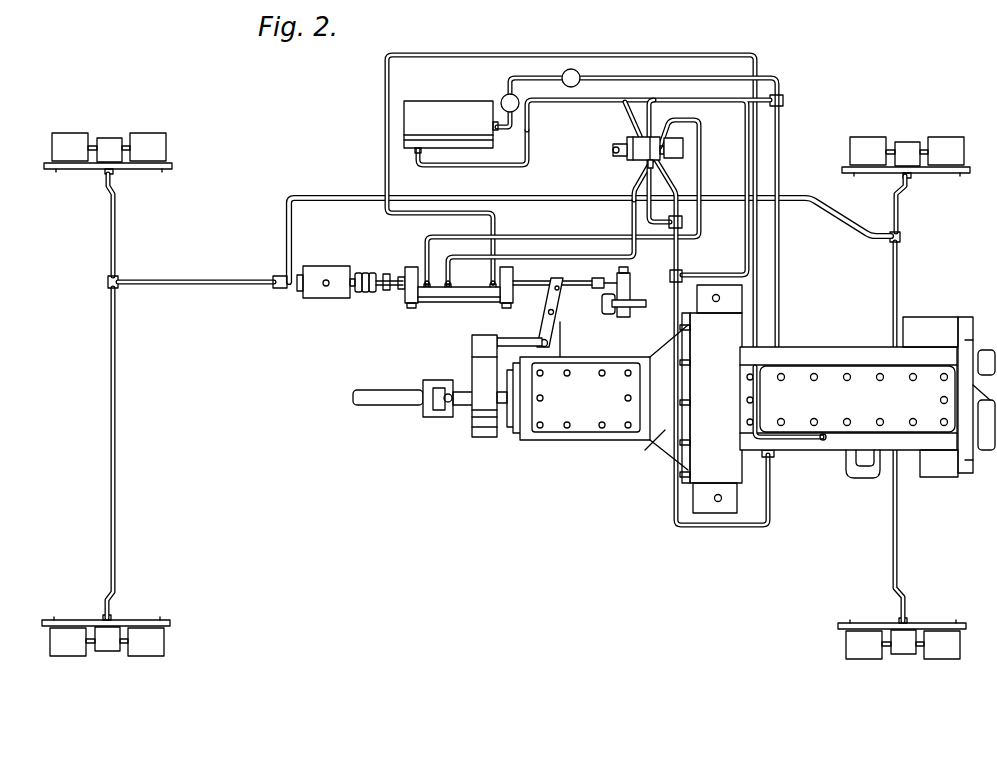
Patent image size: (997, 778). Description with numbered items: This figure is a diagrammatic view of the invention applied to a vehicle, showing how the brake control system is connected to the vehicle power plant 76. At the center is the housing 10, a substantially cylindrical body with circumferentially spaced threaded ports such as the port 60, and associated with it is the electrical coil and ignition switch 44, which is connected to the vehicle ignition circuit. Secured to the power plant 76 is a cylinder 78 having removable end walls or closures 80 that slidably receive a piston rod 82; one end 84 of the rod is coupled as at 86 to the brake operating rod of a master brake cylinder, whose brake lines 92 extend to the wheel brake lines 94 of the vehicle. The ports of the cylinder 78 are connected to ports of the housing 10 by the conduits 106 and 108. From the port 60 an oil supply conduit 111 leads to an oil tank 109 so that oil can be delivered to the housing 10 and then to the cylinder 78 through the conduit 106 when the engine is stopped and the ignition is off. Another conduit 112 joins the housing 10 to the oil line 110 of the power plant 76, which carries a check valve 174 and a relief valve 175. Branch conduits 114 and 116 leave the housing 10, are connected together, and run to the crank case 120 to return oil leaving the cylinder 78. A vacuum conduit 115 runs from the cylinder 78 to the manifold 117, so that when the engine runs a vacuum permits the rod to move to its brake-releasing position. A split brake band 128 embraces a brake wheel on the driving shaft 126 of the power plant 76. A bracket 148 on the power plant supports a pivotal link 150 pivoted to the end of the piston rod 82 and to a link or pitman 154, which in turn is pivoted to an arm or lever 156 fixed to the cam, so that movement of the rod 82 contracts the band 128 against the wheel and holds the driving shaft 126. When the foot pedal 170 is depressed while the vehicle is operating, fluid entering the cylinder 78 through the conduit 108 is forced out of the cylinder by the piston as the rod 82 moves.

The housing 10 is at (632, 140).
The electrical coil and ignition switch 44 is at (678, 157).
The port 60 is at (646, 166).
The vehicle power plant 76 is at (867, 397).
The cylinder 78 is at (432, 302).
The end walls or closures 80 is at (413, 268).
The piston rod 82 is at (532, 288).
The end of piston rod 84 is at (392, 293).
The coupling 86 is at (390, 273).
The brake lines 92 is at (330, 196).
The wheel brake lines 94 is at (116, 412).
The conduit 106 is at (574, 256).
The conduit 108 is at (516, 237).
The oil tank 109 is at (438, 112).
The oil line 110 is at (779, 166).
The oil supply conduit 111 is at (529, 148).
The conduit 112 is at (708, 103).
The branch conduit 114 is at (636, 186).
The conduit 115 is at (385, 124).
The branch conduit 116 is at (679, 260).
The manifold 117 is at (811, 447).
The crank case 120 is at (645, 442).
The driving shaft 126 is at (391, 407).
The split brake band 128 is at (482, 437).
The bracket 148 is at (562, 345).
The pivotal link 150 is at (556, 313).
The link or pitman 154 is at (505, 340).
The arm or lever 156 is at (472, 342).
The foot pedal 170 is at (636, 307).
The check valve 174 is at (505, 97).
The relief valve 175 is at (577, 70).